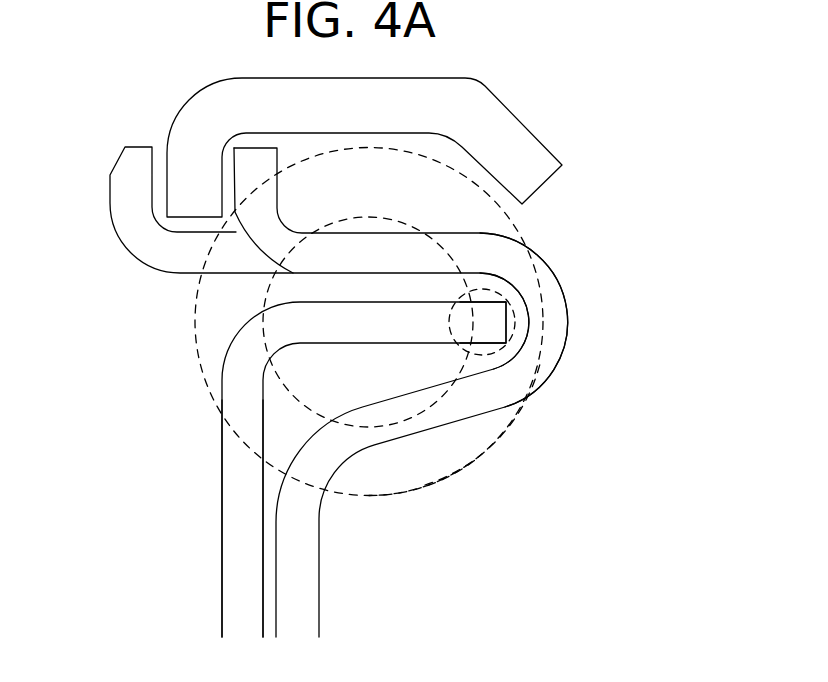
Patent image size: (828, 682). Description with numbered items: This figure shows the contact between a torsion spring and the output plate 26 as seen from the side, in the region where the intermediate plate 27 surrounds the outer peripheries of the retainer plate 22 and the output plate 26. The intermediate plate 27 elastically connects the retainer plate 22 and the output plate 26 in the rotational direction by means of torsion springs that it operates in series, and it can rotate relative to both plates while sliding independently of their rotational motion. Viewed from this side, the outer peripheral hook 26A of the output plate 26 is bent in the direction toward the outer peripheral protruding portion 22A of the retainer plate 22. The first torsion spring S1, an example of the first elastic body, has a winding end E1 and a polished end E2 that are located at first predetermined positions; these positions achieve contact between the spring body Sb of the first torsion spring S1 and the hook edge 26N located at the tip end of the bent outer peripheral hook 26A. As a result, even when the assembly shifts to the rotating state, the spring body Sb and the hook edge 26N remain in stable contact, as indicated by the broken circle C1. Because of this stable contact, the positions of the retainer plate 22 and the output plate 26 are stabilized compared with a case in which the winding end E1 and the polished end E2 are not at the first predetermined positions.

The intermediate plate 27 is at (188, 104).
The retainer plate 22 is at (560, 372).
The outer peripheral protruding portion 22A is at (568, 306).
The output plate 26 is at (218, 560).
The outer peripheral hook 26A is at (222, 528).
The hook edge 26N is at (500, 322).
The broken circle C1 is at (508, 293).
The winding end E1 is at (194, 316).
The polished end E2 is at (300, 435).
The spring body Sb is at (488, 423).
The first torsion spring S1 is at (465, 467).